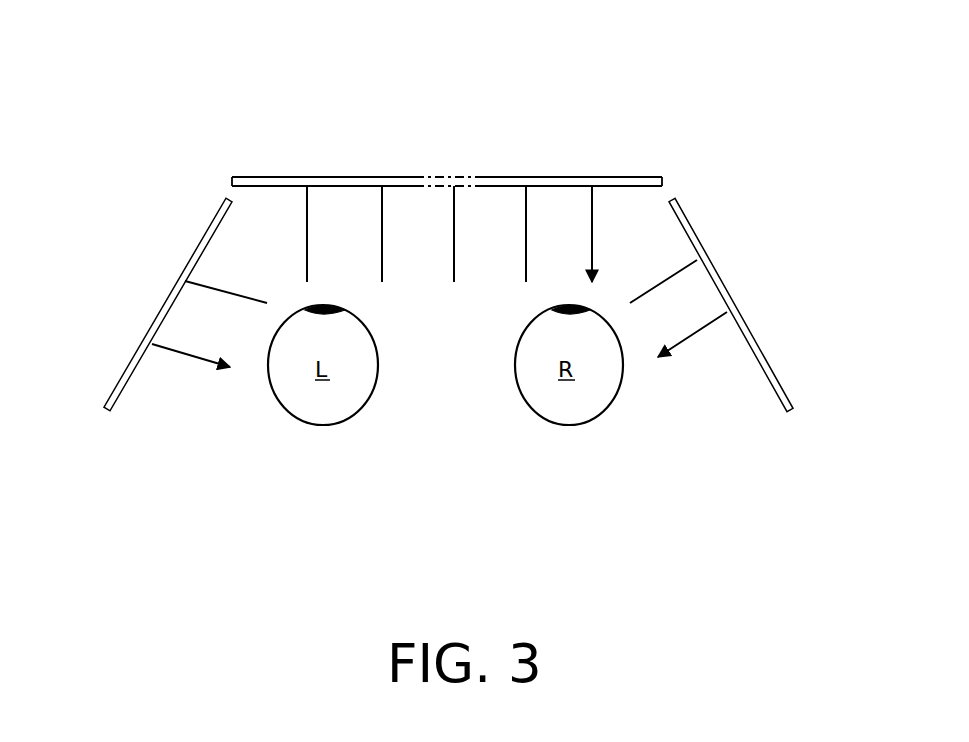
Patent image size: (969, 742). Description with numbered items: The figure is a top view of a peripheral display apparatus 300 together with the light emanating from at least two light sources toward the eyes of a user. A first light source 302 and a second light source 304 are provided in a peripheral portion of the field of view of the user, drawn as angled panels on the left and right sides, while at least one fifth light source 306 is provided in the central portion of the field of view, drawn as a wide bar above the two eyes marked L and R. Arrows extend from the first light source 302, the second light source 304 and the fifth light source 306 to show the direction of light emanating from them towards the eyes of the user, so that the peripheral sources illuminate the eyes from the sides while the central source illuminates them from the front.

The peripheral display apparatus 300 is at (814, 57).
The first light source 302 is at (167, 300).
The second light source 304 is at (727, 287).
The fifth light source 306 is at (613, 176).